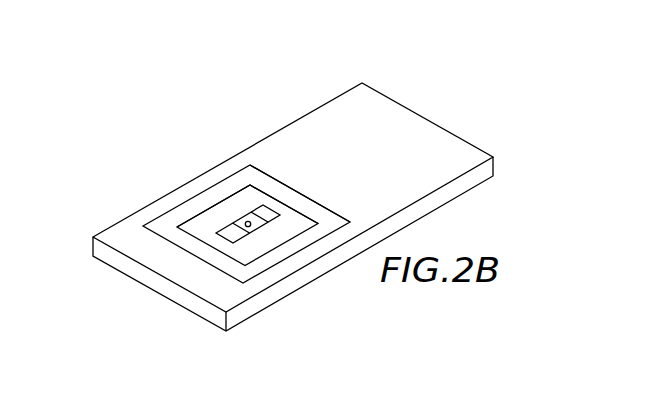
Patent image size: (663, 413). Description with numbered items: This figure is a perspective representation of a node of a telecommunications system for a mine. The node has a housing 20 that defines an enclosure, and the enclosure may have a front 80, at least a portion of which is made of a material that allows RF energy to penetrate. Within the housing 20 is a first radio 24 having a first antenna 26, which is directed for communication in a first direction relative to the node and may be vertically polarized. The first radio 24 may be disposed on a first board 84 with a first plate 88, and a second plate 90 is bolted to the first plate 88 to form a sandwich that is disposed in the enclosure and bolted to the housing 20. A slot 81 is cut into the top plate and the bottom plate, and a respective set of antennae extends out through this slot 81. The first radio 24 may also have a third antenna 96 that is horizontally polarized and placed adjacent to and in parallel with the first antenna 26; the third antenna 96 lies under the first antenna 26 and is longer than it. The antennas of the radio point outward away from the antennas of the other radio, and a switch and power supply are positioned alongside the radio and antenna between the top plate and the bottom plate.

The housing 20 is at (311, 183).
The first radio 24 is at (170, 212).
The first antenna 26 is at (218, 233).
The front 80 is at (188, 150).
The slot 81 is at (273, 178).
The first board 84 is at (252, 183).
The first plate 88 is at (377, 125).
The second plate 90 is at (470, 192).
The third antenna 96 is at (277, 208).